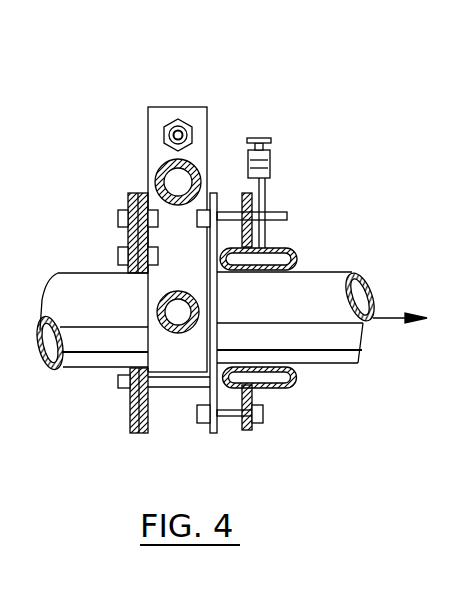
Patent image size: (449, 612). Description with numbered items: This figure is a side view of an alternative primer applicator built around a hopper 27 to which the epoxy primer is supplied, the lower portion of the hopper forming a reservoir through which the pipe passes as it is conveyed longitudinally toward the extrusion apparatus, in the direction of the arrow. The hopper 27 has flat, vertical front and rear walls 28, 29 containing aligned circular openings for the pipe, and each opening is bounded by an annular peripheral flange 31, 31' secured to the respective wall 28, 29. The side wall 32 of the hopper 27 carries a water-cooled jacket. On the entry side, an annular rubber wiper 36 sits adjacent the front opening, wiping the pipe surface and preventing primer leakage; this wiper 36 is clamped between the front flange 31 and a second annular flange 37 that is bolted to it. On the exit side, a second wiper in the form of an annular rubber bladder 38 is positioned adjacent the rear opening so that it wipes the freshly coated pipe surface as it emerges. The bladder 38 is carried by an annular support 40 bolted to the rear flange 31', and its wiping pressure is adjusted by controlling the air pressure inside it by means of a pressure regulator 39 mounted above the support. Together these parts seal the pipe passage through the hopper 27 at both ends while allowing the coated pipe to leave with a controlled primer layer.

The hopper 27 is at (196, 96).
The front wall 28 is at (147, 136).
The rear wall 29 is at (208, 133).
The annular peripheral flange 31 is at (114, 425).
The annular peripheral flange 31' is at (237, 338).
The side wall 32 is at (156, 184).
The annular wiper 36 is at (120, 397).
The second annular flange 37 is at (128, 236).
The annular rubber bladder 38 is at (298, 258).
The pressure regulator 39 is at (275, 200).
The annular support 40 is at (259, 432).